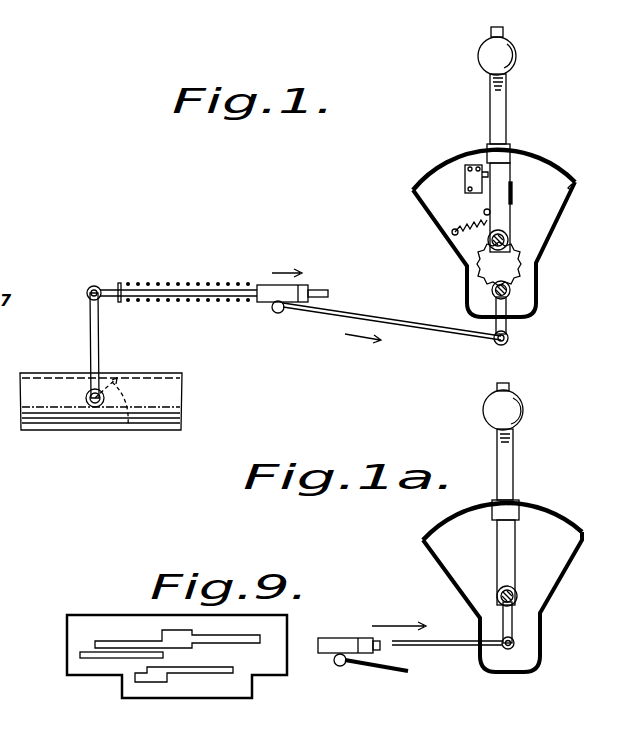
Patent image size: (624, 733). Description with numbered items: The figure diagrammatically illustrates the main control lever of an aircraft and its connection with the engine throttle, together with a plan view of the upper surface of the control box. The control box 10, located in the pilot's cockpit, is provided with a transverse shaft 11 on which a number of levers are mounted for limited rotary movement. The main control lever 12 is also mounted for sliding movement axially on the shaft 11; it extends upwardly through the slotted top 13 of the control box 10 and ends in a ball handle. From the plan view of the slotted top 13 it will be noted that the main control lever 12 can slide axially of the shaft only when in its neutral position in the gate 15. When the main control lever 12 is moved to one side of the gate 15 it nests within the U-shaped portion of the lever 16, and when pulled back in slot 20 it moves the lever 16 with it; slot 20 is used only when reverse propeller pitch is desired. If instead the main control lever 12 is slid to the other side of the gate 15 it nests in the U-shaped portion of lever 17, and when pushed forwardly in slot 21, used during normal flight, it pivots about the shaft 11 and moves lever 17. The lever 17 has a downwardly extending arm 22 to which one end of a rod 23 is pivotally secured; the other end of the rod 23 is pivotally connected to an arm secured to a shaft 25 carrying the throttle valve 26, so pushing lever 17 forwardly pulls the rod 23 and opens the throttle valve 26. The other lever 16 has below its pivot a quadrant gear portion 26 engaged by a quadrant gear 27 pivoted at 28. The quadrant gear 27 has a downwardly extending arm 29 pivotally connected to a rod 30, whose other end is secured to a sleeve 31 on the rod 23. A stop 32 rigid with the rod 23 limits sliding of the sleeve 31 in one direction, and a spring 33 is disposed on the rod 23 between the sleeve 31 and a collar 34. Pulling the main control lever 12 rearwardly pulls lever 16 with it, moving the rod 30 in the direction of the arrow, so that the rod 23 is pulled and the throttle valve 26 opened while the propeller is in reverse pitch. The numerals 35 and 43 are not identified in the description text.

In FIG. 1, the control box 10 is at (562, 213).
In FIG. 1A, the transverse shaft 11 is at (514, 591).
In FIG. 1, the main control lever 12 is at (497, 105).
In FIG. 1A, the main control lever 12 is at (507, 458).
In FIG. 9, the slotted top 13 is at (90, 630).
In FIG. 9, the gate 15 is at (190, 644).
In FIG. 1, the lever 16 is at (508, 170).
In FIG. 1A, the lever 17 is at (518, 538).
In FIG. 9, the slot 20 is at (262, 645).
In FIG. 9, the slot 21 is at (125, 641).
In FIG. 1A, the downwardly extending arm 22 is at (505, 615).
In FIG. 1, the rod 23 is at (330, 290).
In FIG. 1, the shaft 25 is at (96, 407).
In FIG. 1, the throttle valve 26 is at (510, 245).
In FIG. 1, the quadrant gear 27 is at (480, 276).
In FIG. 1, the pivot 28 is at (492, 293).
In FIG. 1, the downwardly extending arm 29 is at (497, 322).
In FIG. 1, the rod 30 is at (416, 326).
In FIG. 1, the sleeve 31 is at (272, 302).
In FIG. 1, the stop 32 is at (300, 290).
In FIG. 1, the spring 33 is at (253, 286).
In FIG. 1, the collar 34 is at (122, 288).
In FIG. 1, the link 35 is at (100, 348).
In FIG. 1A, the rod 43 is at (470, 647).